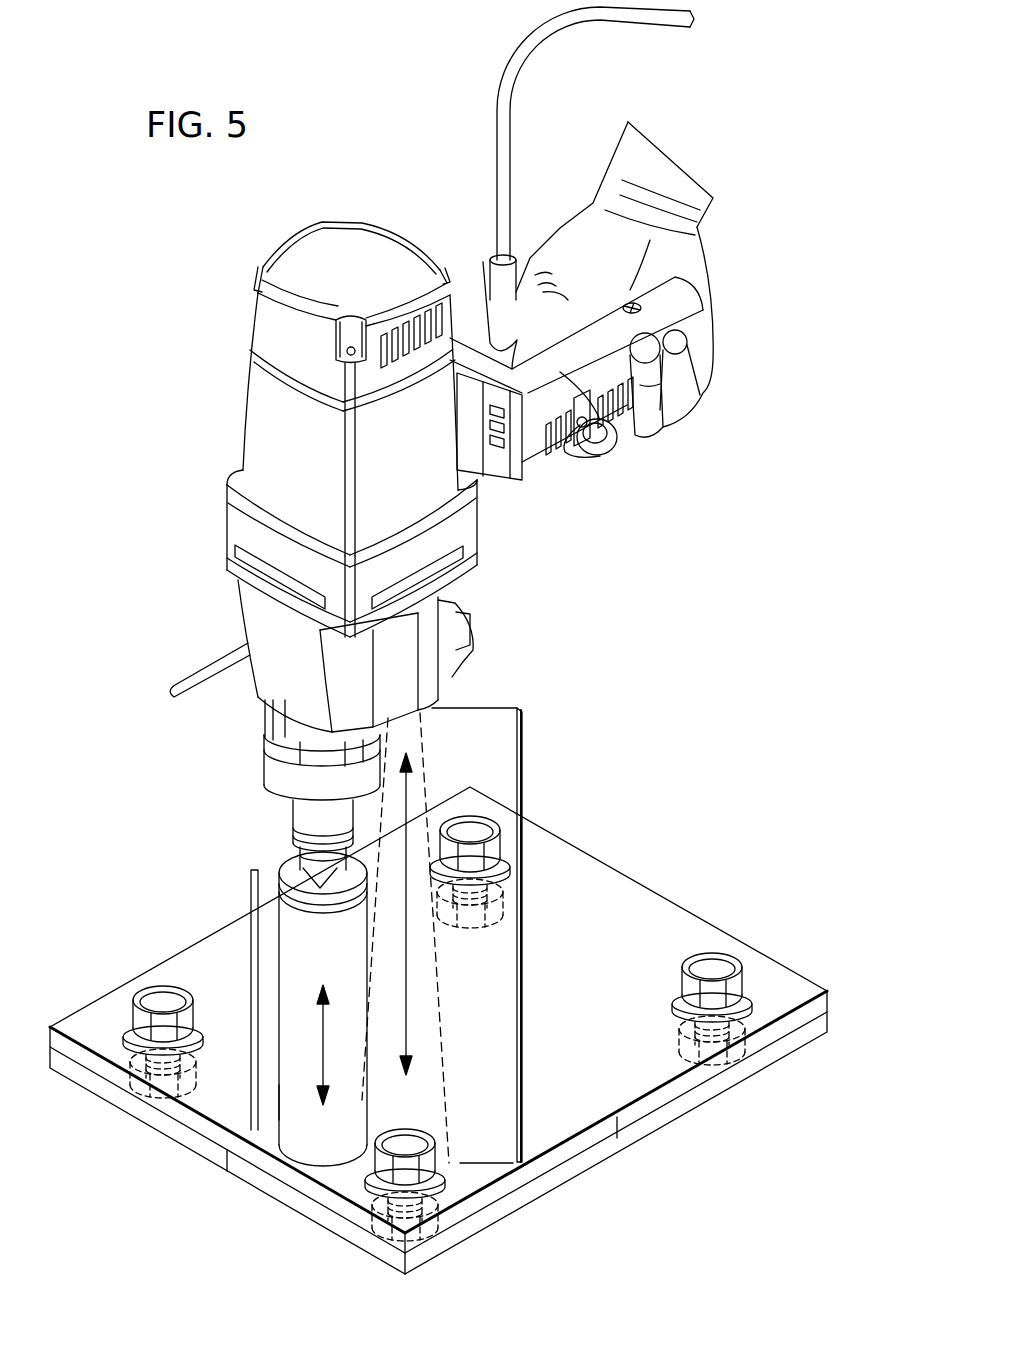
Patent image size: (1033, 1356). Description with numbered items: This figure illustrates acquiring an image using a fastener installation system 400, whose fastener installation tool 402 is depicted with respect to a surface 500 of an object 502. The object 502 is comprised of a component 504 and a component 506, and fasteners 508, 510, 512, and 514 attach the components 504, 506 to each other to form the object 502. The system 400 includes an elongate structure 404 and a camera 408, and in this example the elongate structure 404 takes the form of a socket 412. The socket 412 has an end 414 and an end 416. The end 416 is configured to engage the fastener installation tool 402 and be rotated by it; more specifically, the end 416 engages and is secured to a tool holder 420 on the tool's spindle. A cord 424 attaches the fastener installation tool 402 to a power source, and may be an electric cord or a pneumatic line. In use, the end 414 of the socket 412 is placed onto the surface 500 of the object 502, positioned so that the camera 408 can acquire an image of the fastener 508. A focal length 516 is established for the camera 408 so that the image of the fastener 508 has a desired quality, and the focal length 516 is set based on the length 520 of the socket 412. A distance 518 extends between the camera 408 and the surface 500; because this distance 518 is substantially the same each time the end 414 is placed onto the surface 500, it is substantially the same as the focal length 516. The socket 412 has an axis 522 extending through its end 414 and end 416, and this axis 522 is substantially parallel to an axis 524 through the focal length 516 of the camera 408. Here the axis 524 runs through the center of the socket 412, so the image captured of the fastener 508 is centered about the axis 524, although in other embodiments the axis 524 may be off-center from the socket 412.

The fastener installation system 400 is at (382, 195).
The fastener installation tool 402 is at (318, 243).
The elongate structure 404 is at (293, 1143).
The camera 408 is at (415, 712).
The socket 412 is at (277, 1103).
The end 414 is at (323, 1165).
The end 416 is at (282, 870).
The tool holder 420 is at (300, 850).
The cord 424 is at (497, 116).
The surface 500 is at (608, 897).
The object 502 is at (672, 897).
The component 504 is at (97, 1010).
The component 506 is at (105, 1093).
The fastener 508 is at (408, 1133).
The fastener 510 is at (163, 990).
The fastener 512 is at (473, 822).
The fastener 514 is at (712, 958).
The focal length 516 is at (438, 976).
The distance 518 is at (538, 932).
The length 520 is at (242, 967).
The axis 522 is at (302, 1012).
The axis 524 is at (405, 1015).